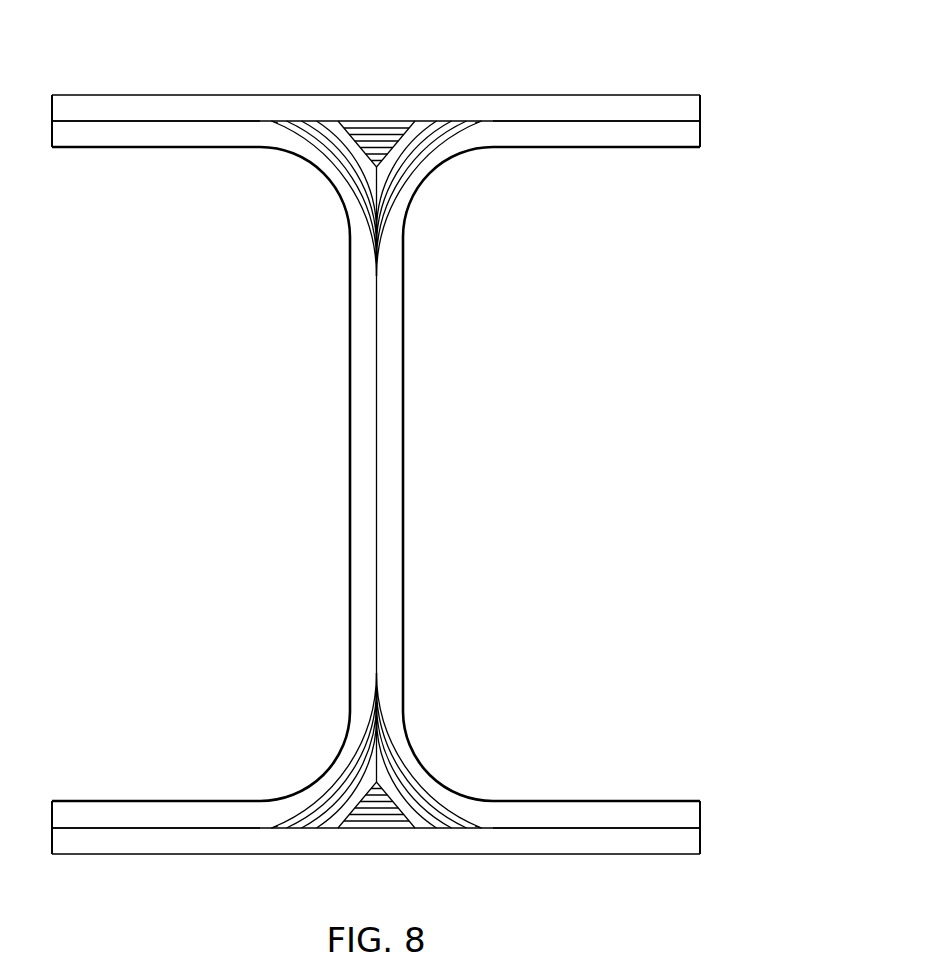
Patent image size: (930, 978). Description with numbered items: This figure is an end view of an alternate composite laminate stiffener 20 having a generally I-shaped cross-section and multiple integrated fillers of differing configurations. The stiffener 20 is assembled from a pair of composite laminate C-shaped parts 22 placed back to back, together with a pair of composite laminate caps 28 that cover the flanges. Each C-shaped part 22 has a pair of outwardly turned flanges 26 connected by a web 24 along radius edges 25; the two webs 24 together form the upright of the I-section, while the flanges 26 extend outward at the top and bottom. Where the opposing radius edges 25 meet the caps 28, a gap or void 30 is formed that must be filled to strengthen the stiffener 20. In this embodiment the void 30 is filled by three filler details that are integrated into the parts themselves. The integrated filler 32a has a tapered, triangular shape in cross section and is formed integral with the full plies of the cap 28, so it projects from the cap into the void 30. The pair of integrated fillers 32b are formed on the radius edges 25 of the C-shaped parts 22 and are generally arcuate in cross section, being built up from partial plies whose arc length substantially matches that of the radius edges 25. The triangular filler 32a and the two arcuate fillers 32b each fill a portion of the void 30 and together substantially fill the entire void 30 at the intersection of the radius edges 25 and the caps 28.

The stiffener 20 is at (520, 59).
The C-shaped part 22 is at (186, 423).
The web 24 is at (349, 482).
The radius edge 25 is at (308, 121).
The flange 26 is at (115, 150).
The cap 28 is at (585, 93).
The void 30 is at (358, 110).
The integrated filler 32a is at (387, 133).
The integrated filler 32b is at (340, 148).